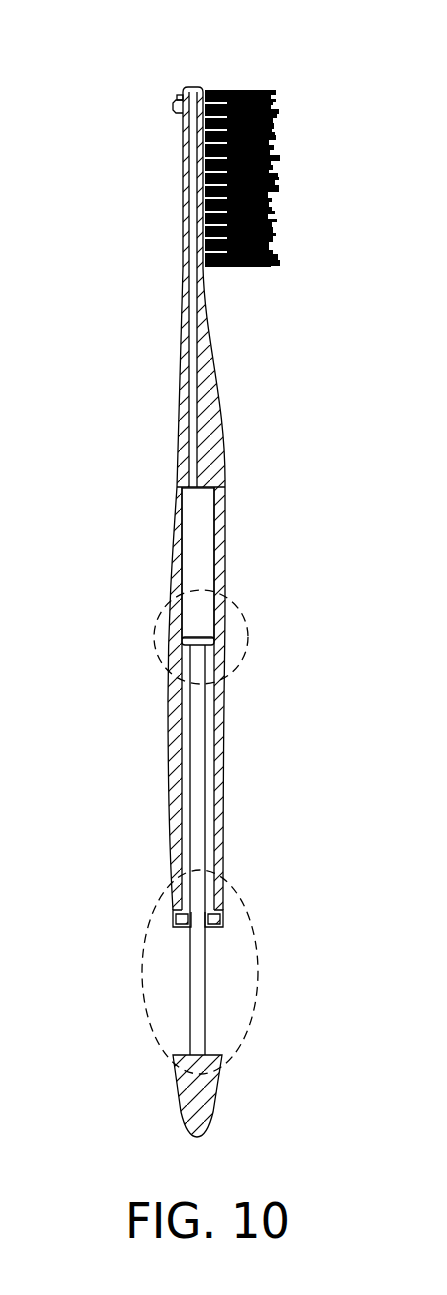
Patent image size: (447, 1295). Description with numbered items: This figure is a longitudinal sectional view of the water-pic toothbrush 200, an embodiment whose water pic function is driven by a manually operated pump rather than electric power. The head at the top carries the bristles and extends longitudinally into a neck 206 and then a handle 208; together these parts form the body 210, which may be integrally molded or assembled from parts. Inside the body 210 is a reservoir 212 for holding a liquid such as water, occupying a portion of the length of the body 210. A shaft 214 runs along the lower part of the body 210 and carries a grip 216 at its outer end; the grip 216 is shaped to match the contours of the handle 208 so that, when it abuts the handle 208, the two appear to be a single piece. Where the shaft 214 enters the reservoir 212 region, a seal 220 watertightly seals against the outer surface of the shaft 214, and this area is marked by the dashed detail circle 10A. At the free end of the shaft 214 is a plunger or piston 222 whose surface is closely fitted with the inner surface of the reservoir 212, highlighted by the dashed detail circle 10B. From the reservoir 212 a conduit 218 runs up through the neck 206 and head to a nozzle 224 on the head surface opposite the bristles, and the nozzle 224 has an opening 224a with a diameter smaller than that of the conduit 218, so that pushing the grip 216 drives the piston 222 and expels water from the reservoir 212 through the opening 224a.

The water-pic toothbrush 200 is at (118, 53).
The neck 206 is at (215, 406).
The handle 208 is at (223, 728).
The body 210 is at (104, 517).
The reservoir 212 is at (193, 573).
The shaft 214 is at (205, 997).
The grip 216 is at (210, 1093).
The conduit 218 is at (193, 189).
The seal 220 is at (207, 921).
The plunger or piston 222 is at (200, 639).
The nozzle 224 is at (172, 105).
The opening 224a is at (178, 96).
The detail view 10A region 10A is at (144, 1054).
The detail view 10B region 10B is at (152, 668).